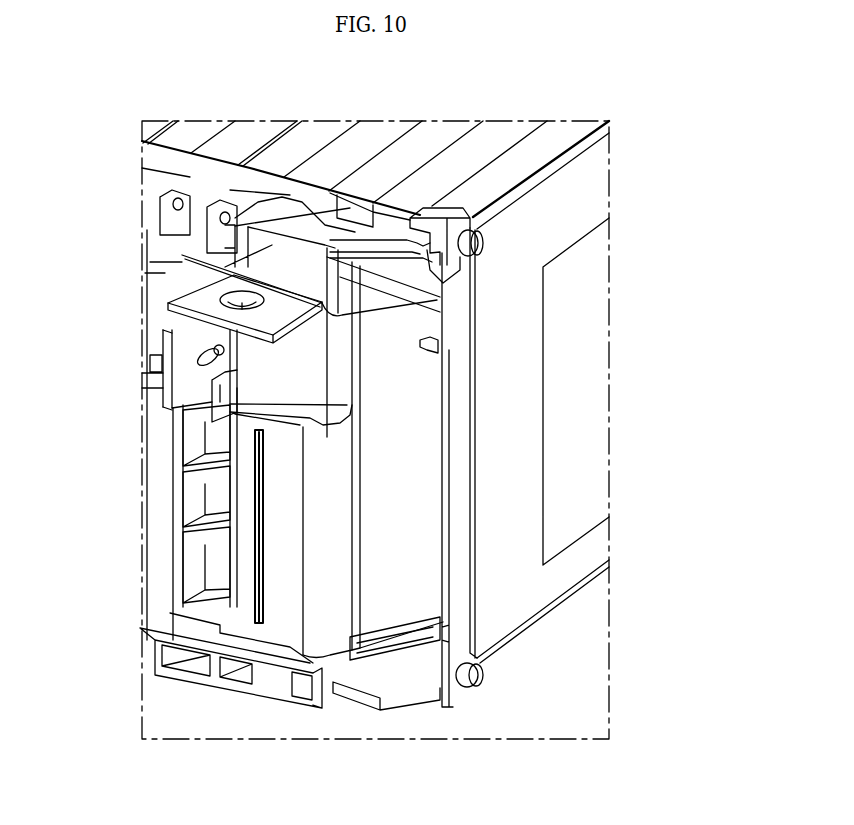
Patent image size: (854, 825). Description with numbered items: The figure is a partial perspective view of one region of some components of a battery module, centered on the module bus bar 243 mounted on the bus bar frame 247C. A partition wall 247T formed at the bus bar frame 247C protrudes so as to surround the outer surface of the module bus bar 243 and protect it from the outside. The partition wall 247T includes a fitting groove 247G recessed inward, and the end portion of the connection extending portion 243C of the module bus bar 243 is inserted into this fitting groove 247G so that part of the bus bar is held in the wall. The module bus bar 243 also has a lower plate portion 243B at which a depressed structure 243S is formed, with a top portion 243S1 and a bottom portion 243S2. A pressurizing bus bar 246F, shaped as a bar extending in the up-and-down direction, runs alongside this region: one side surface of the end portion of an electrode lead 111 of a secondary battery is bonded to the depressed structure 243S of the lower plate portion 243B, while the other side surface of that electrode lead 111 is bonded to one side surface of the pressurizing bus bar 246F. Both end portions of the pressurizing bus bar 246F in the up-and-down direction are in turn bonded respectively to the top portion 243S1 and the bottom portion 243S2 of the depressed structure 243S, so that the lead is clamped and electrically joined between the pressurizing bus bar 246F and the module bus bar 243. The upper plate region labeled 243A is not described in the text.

The electrode lead 111 is at (260, 548).
The module bus bar 243 is at (290, 283).
The cover upper plate 243A is at (268, 362).
The lower plate portion 243B is at (303, 547).
The connection extending portion 243C is at (380, 327).
The depressed structure 243S is at (267, 578).
The top portion of the depressed structure 243S1 is at (252, 432).
The bottom portion of the depressed structure 243S2 is at (233, 622).
The pressurizing bus bar 246F is at (247, 494).
The bus bar frame 247C is at (190, 242).
The fitting groove 247G is at (425, 345).
The partition wall 247T is at (317, 247).